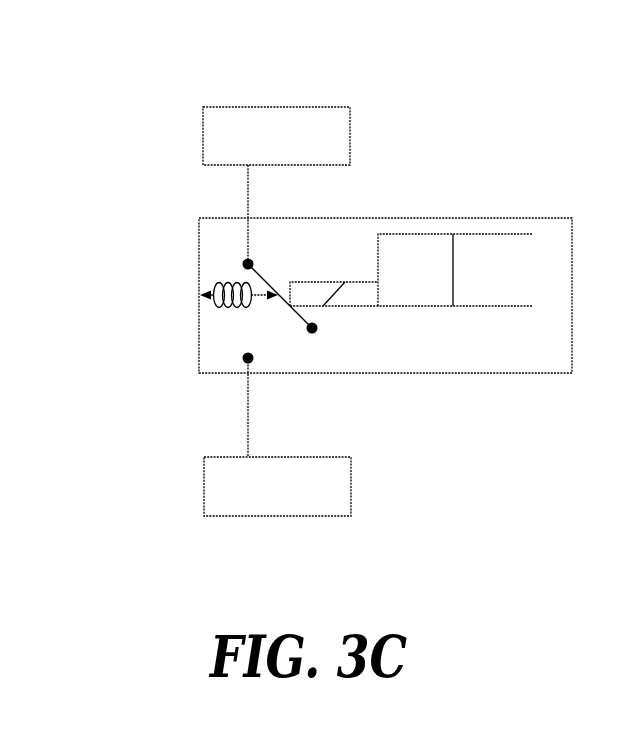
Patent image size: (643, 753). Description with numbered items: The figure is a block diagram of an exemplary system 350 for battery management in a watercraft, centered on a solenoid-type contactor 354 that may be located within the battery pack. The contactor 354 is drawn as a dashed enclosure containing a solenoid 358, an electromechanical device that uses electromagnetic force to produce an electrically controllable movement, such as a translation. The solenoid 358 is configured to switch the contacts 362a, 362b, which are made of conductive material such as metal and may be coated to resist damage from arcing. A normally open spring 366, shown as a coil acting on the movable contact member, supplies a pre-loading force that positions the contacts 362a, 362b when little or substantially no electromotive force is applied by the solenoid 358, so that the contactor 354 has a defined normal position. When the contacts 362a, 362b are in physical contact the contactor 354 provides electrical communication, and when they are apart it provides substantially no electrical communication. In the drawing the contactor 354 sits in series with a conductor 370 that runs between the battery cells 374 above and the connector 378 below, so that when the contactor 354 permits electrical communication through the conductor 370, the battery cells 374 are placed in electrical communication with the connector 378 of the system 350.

The system 350 is at (181, 73).
The contactor 354 is at (479, 218).
The solenoid 358 is at (405, 306).
The contact 362a is at (245, 356).
The contact 362b is at (314, 332).
The spring 366 is at (67, 236).
The conductor 370 is at (98, 141).
The battery cells 374 is at (228, 133).
The connector 378 is at (235, 485).